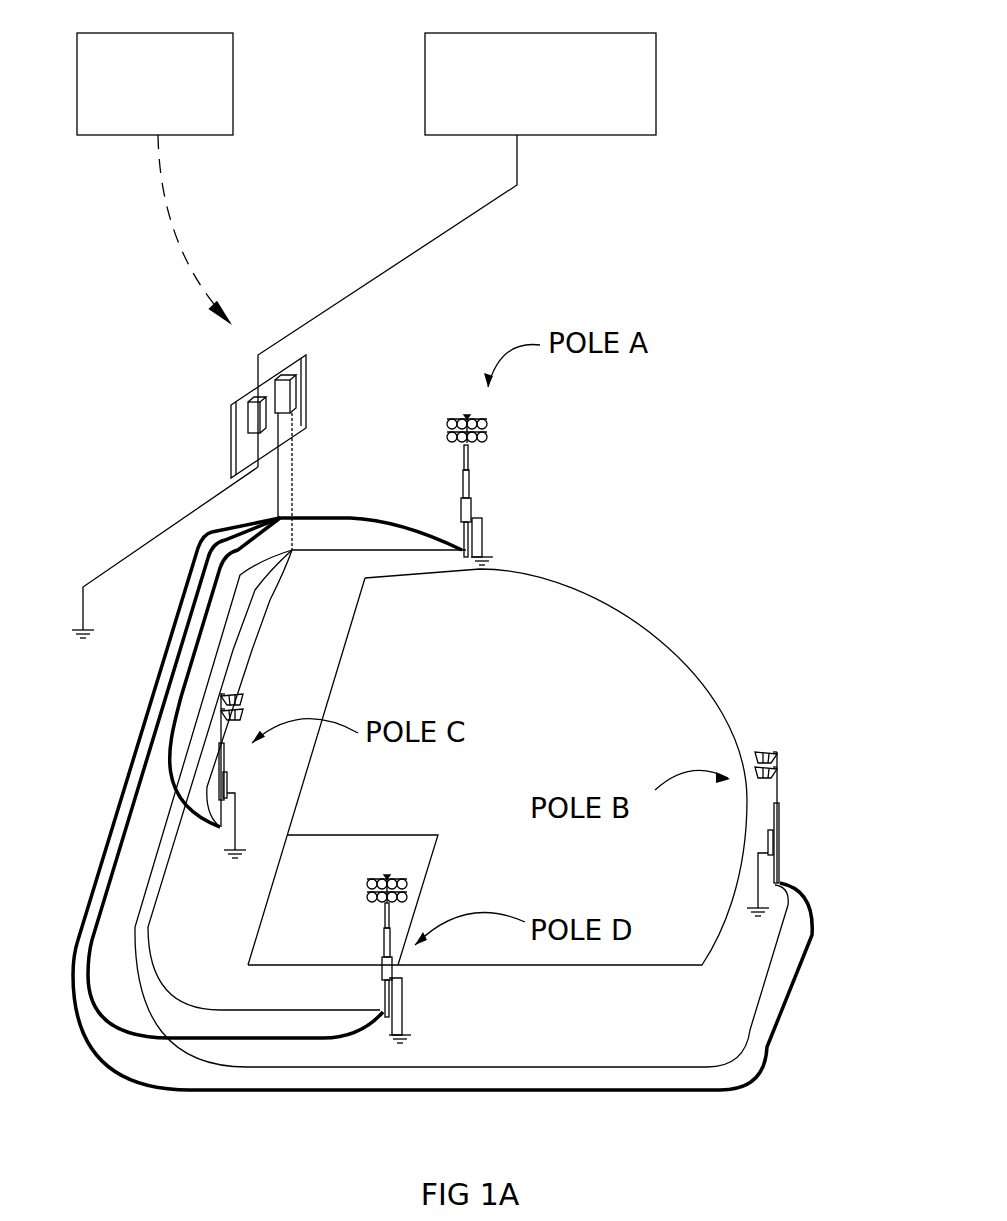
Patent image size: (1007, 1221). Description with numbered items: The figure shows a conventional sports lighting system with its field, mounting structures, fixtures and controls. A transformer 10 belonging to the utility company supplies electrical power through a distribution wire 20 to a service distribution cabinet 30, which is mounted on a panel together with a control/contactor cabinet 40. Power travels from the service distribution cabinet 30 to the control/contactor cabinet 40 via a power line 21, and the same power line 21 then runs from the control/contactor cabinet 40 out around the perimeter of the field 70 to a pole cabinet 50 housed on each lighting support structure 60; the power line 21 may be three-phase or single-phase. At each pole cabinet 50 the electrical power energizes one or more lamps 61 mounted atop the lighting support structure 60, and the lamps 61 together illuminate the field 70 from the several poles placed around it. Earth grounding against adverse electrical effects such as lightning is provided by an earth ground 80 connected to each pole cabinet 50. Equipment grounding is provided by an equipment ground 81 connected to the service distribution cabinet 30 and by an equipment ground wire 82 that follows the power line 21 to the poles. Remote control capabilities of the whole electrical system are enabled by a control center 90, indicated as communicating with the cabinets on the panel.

The transformer 10 is at (656, 80).
The distribution wire 20 is at (445, 232).
The power line 21 is at (275, 397).
The service distribution cabinet 30 is at (250, 420).
The control/contactor cabinet 40 is at (297, 385).
The pole cabinet 50 is at (470, 505).
The lighting support structure 60 is at (465, 483).
The lamp 61 is at (488, 430).
The field 70 is at (657, 628).
The earth ground 80 is at (483, 537).
The equipment ground 81 is at (170, 527).
The equipment ground wire 82 is at (280, 418).
The control center 90 is at (233, 80).